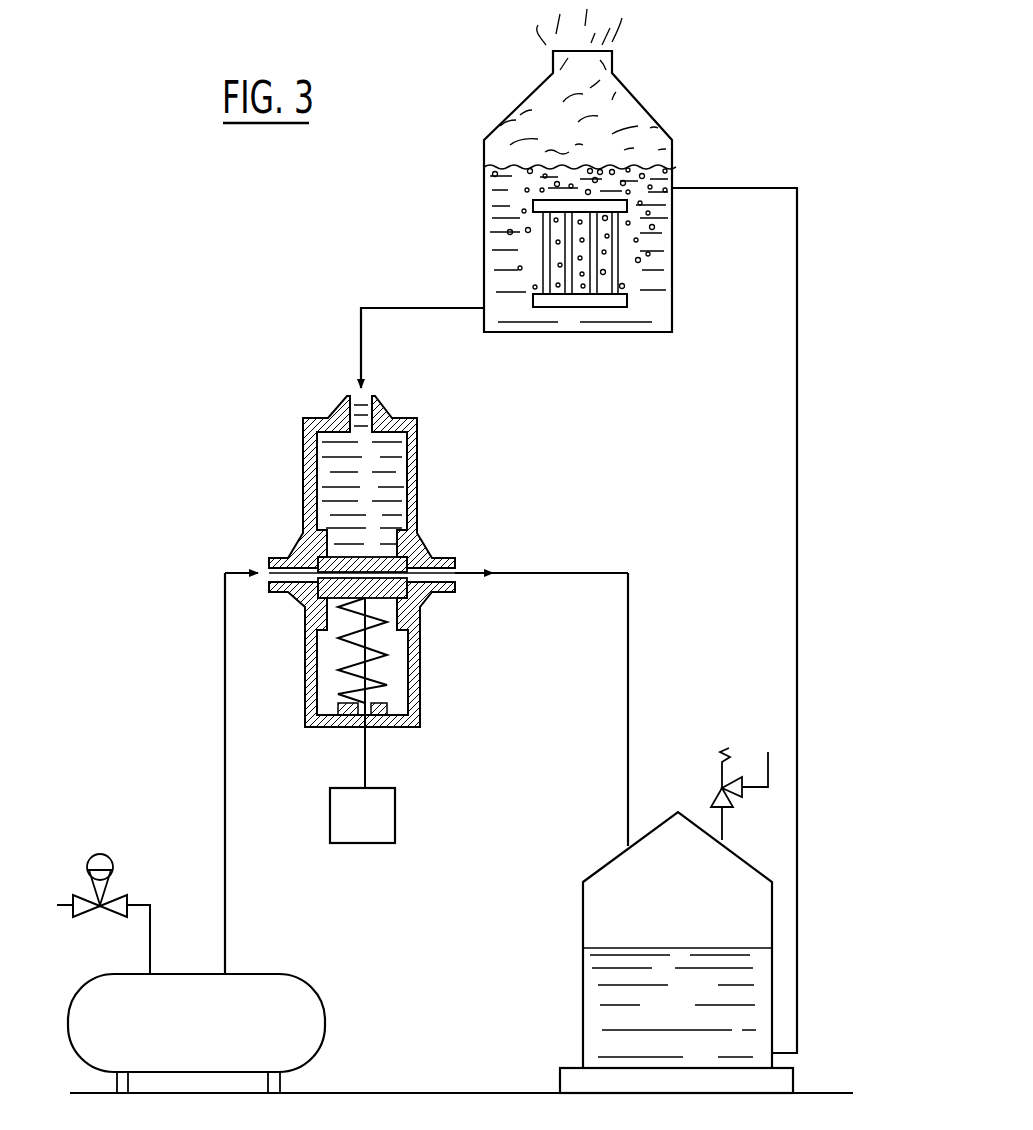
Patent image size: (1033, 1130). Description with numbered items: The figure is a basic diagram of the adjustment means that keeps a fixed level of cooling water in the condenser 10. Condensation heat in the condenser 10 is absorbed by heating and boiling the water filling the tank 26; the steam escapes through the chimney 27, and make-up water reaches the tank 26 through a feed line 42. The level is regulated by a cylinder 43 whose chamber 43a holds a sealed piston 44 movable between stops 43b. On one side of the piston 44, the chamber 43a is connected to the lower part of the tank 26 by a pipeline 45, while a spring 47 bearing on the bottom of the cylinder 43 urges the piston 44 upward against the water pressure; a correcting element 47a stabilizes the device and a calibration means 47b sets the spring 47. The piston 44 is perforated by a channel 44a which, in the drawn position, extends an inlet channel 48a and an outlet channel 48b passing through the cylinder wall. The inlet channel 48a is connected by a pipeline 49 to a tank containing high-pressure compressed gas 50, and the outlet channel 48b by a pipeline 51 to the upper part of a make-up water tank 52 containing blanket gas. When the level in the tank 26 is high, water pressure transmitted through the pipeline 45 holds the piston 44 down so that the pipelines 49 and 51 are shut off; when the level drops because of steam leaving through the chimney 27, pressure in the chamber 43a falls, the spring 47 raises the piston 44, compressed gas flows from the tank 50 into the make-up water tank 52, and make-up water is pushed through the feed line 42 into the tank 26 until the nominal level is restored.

The condenser 10 is at (624, 261).
The tank 26 is at (673, 175).
The chimney 27 is at (613, 58).
The feed line 42 is at (740, 188).
The cylinder 43 is at (426, 608).
The chamber 43a is at (418, 464).
The stops 43b is at (414, 524).
The piston 44 is at (423, 562).
The channel 44a is at (401, 586).
The pipeline 45 is at (418, 308).
The spring 47 is at (376, 682).
The correcting element 47a is at (389, 817).
The calibration means 47b is at (388, 712).
The inlet channel 48a is at (283, 576).
The outlet channel 48b is at (443, 573).
The pipeline 49 is at (222, 702).
The tank containing high-pressure compressed gas 50 is at (250, 1005).
The pipeline 51 is at (630, 645).
The make-up water tank 52 is at (583, 967).